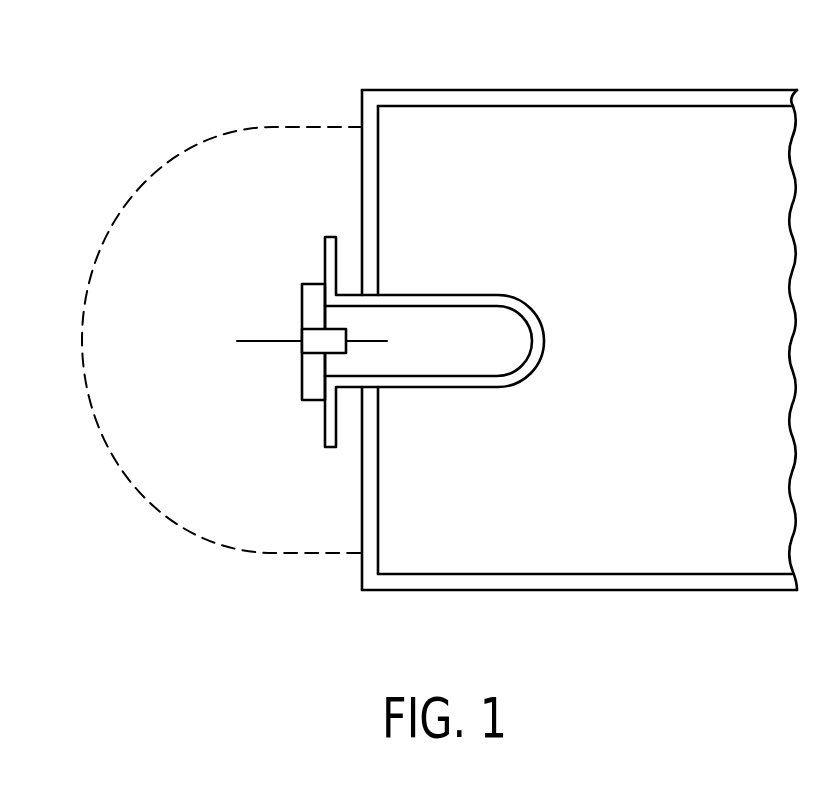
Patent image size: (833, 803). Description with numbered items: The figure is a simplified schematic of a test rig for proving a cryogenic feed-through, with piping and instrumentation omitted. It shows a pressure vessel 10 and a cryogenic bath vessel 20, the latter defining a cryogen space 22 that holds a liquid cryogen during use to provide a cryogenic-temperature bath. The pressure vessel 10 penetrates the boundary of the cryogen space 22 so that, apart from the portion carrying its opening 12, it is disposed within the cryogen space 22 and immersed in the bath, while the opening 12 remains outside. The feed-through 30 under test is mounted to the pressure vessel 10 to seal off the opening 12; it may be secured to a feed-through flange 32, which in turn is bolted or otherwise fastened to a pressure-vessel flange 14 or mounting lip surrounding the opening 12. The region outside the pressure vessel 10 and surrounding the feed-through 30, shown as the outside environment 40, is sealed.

The pressure vessel 10 is at (463, 388).
The opening 12 is at (325, 307).
The pressure-vessel flange 14 is at (326, 240).
The cryogenic bath vessel 20 is at (456, 90).
The cryogen space 22 is at (672, 353).
The feed-through 30 is at (305, 345).
The feed-through flange 32 is at (315, 393).
The outside environment 40 is at (143, 387).